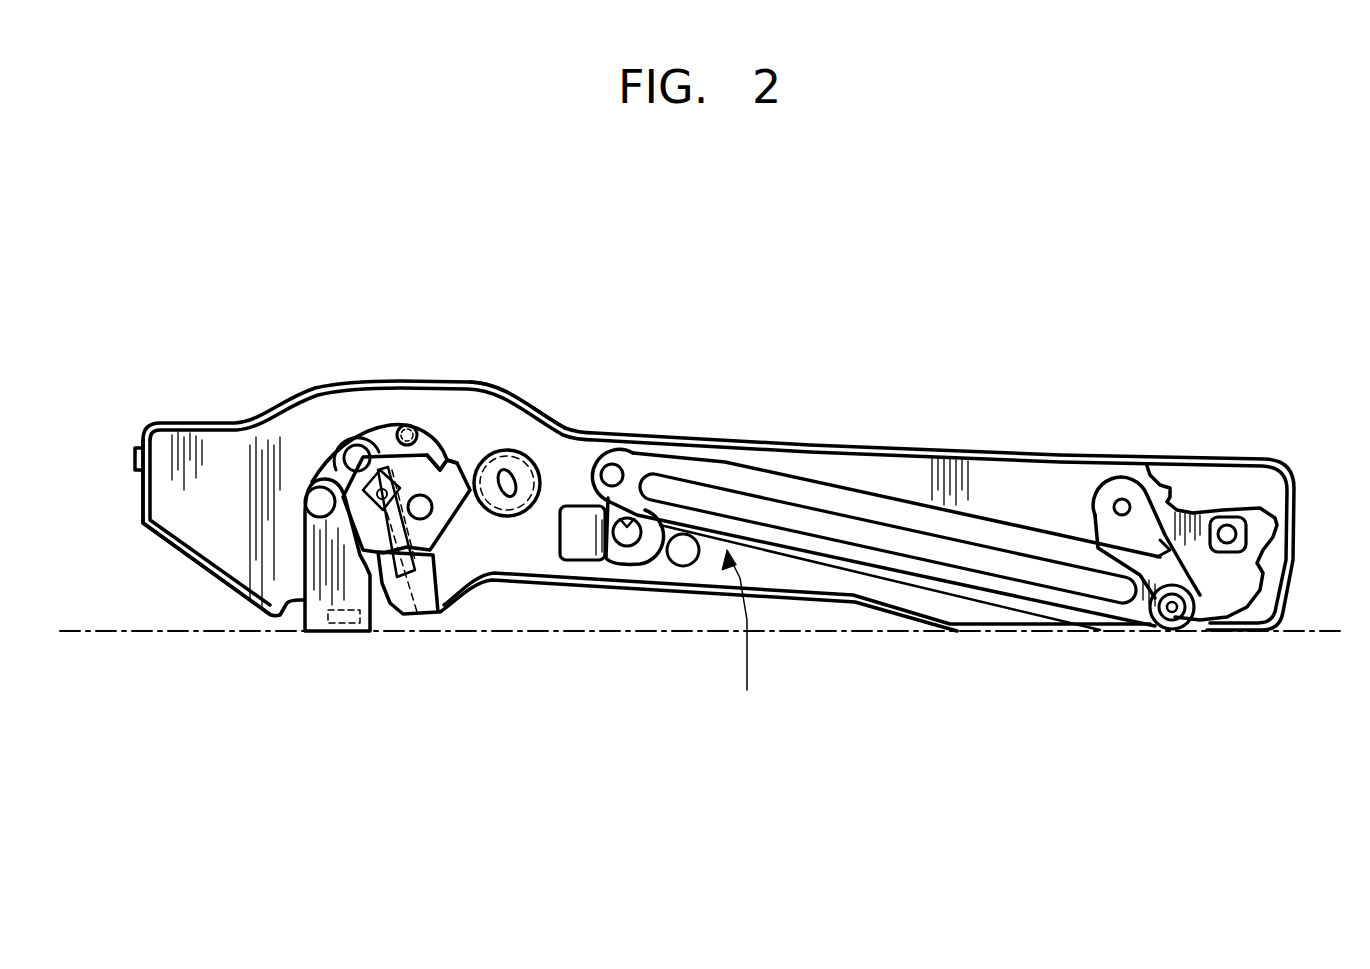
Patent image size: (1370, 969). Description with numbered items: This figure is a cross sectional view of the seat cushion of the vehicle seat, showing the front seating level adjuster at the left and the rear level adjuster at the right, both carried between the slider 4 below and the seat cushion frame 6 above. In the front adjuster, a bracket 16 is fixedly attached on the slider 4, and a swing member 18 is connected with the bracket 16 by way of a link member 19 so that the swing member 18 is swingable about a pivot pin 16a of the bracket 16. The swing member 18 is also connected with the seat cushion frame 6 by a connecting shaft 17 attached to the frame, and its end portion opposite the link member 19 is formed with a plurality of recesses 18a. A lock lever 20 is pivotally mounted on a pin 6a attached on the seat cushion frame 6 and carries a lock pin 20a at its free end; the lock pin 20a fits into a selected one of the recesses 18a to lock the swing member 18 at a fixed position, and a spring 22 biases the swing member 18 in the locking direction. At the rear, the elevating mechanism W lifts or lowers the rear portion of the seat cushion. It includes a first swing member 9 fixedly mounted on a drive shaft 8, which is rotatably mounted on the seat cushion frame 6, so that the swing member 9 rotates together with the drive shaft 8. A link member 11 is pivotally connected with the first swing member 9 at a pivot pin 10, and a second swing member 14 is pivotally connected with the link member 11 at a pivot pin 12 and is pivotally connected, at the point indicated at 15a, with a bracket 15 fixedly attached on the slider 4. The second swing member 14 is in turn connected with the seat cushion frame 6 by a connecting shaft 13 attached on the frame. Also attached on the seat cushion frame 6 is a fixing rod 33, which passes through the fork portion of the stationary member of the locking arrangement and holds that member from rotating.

The slider 4 is at (1320, 630).
The seat cushion frame 6 is at (755, 440).
The pin 6a is at (592, 440).
The drive shaft 8 is at (627, 546).
The first swing member 9 is at (578, 565).
The pivot pin 10 is at (616, 472).
The link member 11 is at (1000, 600).
The pivot pin 12 is at (1174, 612).
The connecting shaft 13 is at (1230, 525).
The second swing member 14 is at (1175, 498).
The bracket 15 is at (1145, 487).
The pivot hole 15a is at (1120, 500).
The bracket 16 is at (284, 622).
The pivot pin 16a is at (310, 478).
The connecting shaft 17 is at (433, 455).
The swing member 18 is at (437, 600).
The recesses 18a is at (405, 425).
The link member 19 is at (350, 446).
The lock lever 20 is at (456, 458).
The lock pin 20a is at (367, 403).
The spring 22 is at (400, 600).
The fixing rod 33 is at (685, 566).
The elevating mechanism W is at (750, 729).